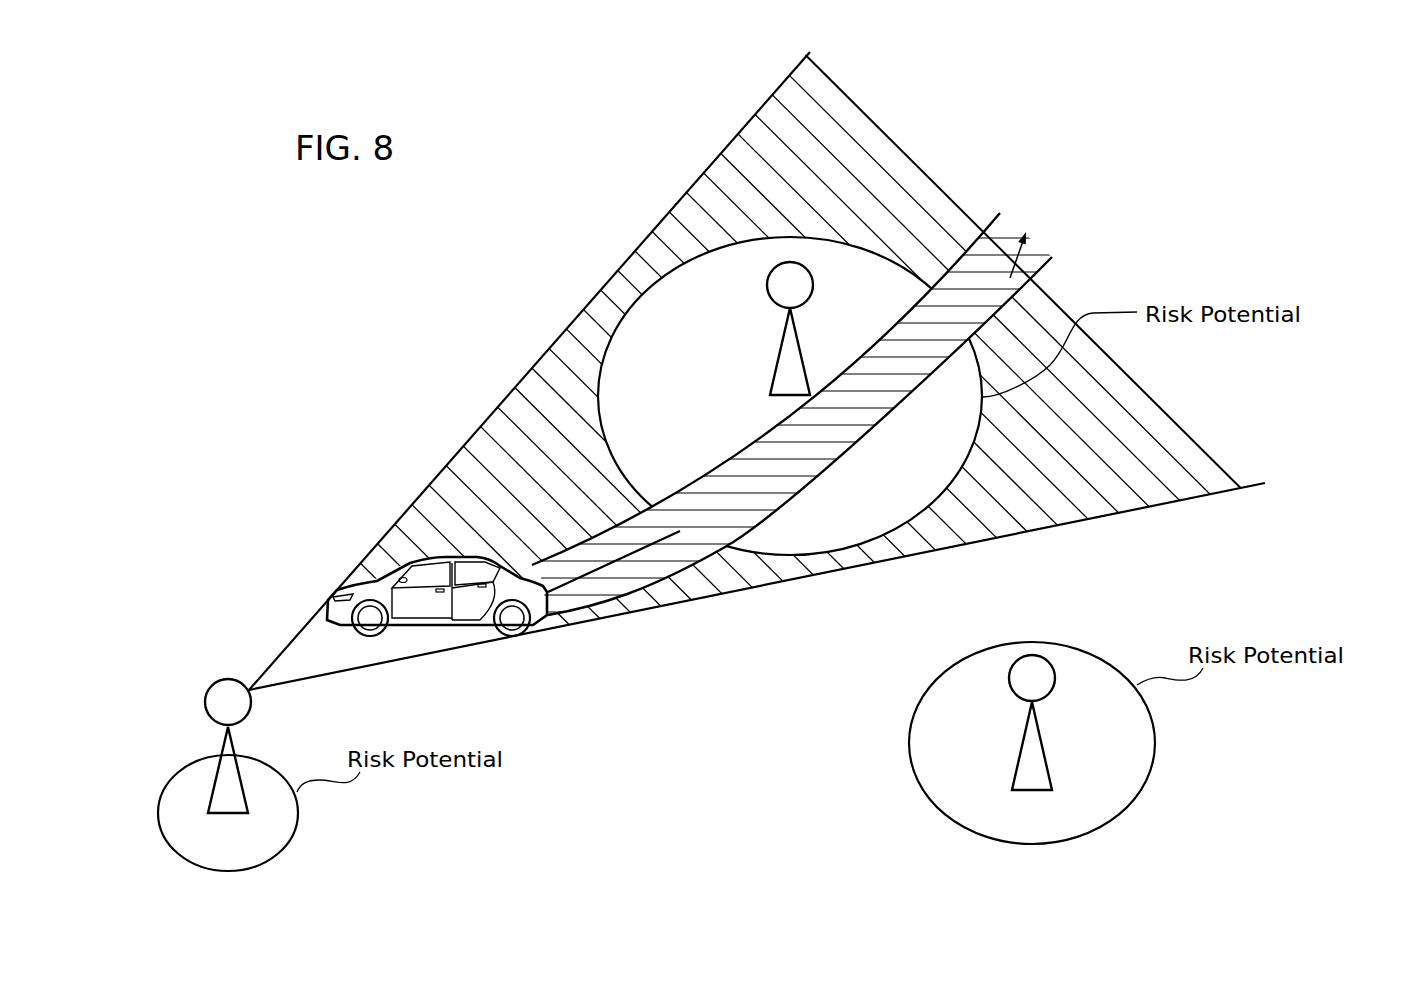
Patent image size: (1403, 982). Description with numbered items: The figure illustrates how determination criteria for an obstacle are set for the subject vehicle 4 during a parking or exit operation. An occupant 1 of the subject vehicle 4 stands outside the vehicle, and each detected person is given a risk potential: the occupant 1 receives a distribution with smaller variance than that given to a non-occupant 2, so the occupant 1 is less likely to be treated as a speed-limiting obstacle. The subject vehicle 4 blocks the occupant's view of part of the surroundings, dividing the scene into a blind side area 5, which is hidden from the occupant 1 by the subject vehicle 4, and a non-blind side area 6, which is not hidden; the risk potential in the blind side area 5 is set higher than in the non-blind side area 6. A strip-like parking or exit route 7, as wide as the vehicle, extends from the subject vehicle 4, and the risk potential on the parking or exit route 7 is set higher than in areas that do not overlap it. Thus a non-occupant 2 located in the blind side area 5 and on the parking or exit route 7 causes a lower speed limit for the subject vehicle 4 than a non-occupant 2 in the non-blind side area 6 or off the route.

The occupant 1 is at (228, 678).
The non-occupant 2 is at (788, 262).
The subject vehicle 4 is at (412, 558).
The blind side area 5 is at (1085, 488).
The non-blind side area 6 is at (453, 338).
The parking or exit route 7 is at (1033, 242).